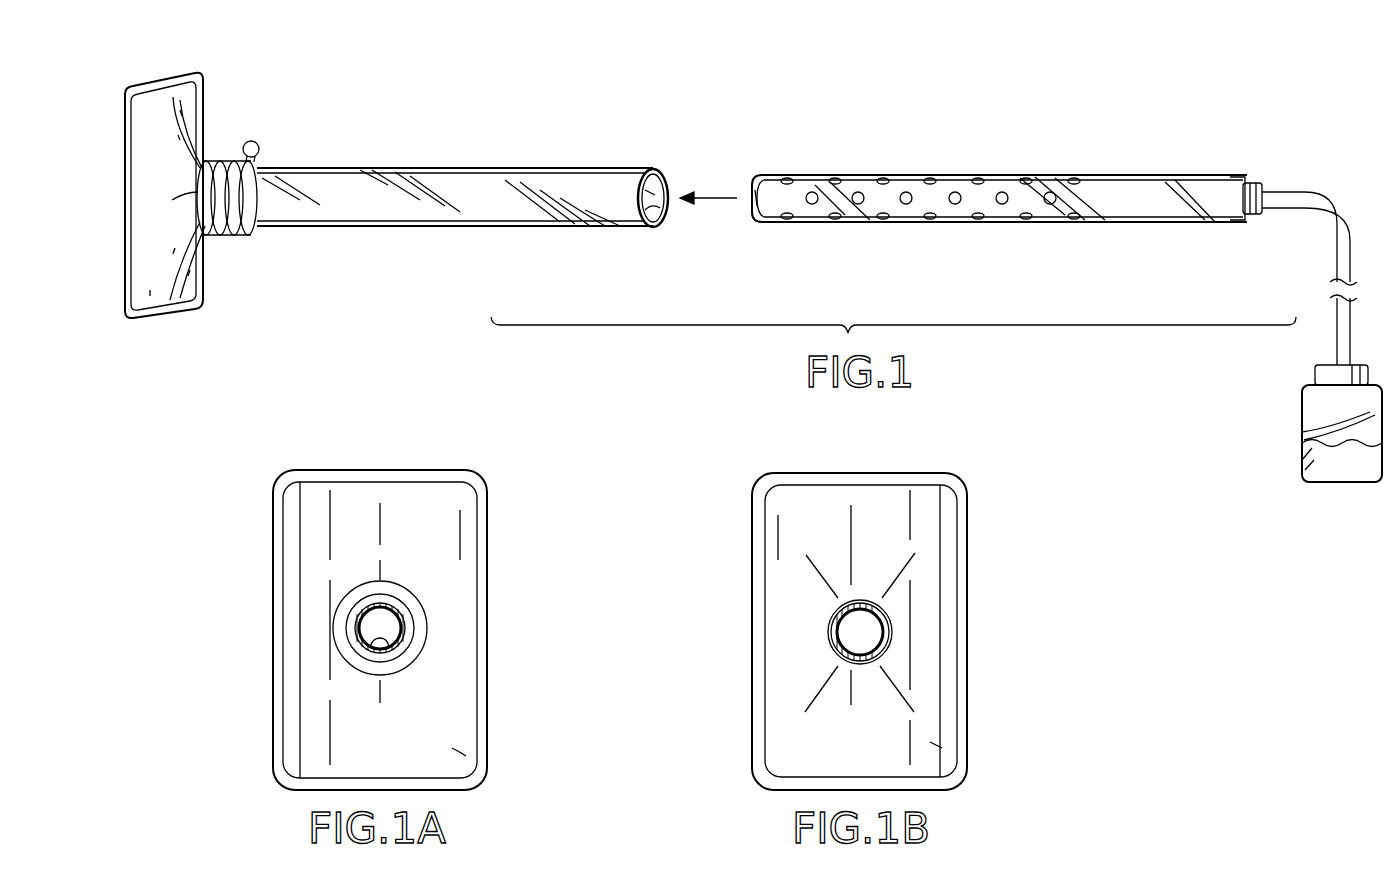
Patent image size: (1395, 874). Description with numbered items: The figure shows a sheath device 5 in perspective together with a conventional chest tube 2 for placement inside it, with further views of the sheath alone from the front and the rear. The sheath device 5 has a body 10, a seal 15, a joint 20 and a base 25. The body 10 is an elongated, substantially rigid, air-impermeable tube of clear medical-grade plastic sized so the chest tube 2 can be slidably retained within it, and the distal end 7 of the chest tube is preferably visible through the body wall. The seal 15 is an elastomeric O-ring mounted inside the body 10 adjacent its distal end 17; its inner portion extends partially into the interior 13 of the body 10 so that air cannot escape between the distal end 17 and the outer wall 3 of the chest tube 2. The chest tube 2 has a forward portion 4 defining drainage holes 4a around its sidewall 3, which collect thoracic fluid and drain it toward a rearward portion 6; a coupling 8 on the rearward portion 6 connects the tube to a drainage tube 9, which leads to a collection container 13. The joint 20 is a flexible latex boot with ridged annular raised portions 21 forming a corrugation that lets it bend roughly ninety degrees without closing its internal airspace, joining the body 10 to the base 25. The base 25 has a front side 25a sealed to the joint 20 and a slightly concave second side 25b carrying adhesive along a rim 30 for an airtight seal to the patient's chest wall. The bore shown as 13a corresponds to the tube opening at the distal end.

In FIG. 1, the chest tube 2 is at (1150, 160).
In FIG. 1, the outer wall 3 is at (1228, 193).
In FIG. 1, the forward portion 4 is at (937, 146).
In FIG. 1, the drainage holes 4a is at (978, 219).
In FIG. 1, the sheath device 5 is at (697, 116).
In FIG. 1, the rearward portion 6 is at (1142, 224).
In FIG. 1, the distal end 7 is at (753, 206).
In FIG. 1, the coupling 8 is at (1262, 183).
In FIG. 1, the drainage tube 9 is at (1352, 258).
In FIG. 1, the body 10 is at (475, 167).
In FIG. 1A, the body 10 is at (413, 668).
In FIG. 1, the interior 13 is at (657, 195).
In FIG. 1A, the interior 13 is at (386, 627).
In FIG. 1B, the interior 13 is at (855, 632).
In FIG. 1, the inner bore 13a is at (641, 191).
In FIG. 1, the seal 15 is at (657, 212).
In FIG. 1A, the seal 15 is at (371, 646).
In FIG. 1, the distal end 17 is at (658, 172).
In FIG. 1A, the distal end 17 is at (368, 605).
In FIG. 1, the joint 20 is at (242, 242).
In FIG. 1A, the joint 20 is at (402, 598).
In FIG. 1, the ridged annular raised portions 21 is at (262, 146).
In FIG. 1, the base 25 is at (185, 117).
In FIG. 1A, the base 25 is at (517, 546).
In FIG. 1B, the base 25 is at (1004, 546).
In FIG. 1A, the front side 25a is at (452, 750).
In FIG. 1B, the second side 25b is at (930, 742).
In FIG. 1B, the rim 30 is at (757, 560).